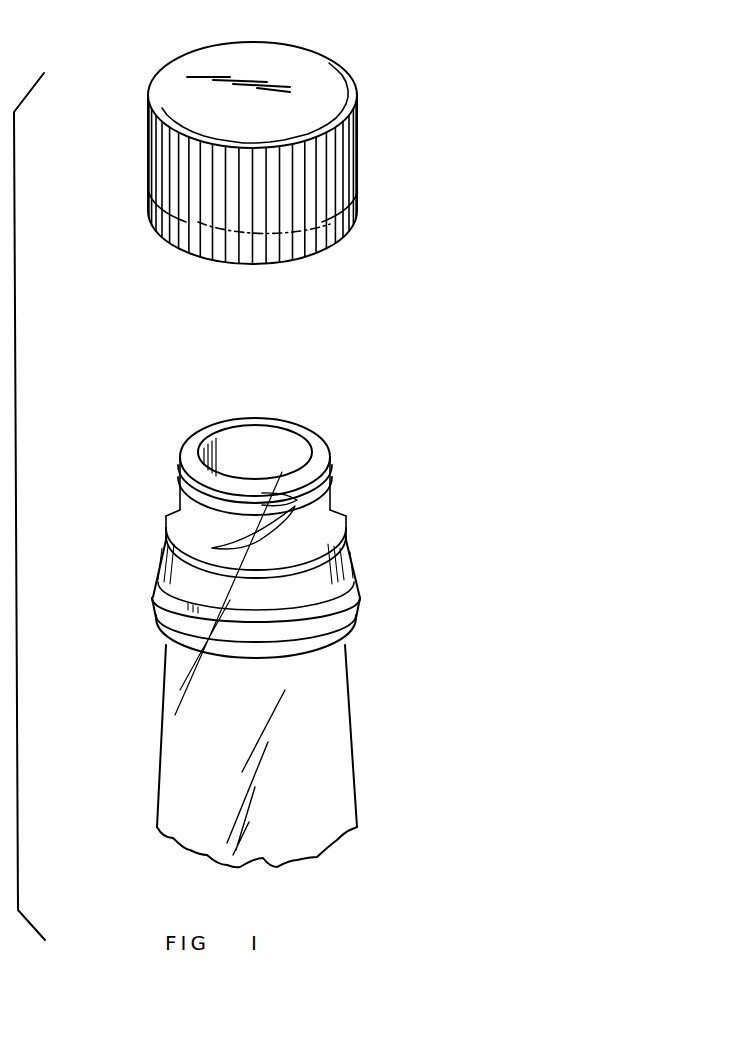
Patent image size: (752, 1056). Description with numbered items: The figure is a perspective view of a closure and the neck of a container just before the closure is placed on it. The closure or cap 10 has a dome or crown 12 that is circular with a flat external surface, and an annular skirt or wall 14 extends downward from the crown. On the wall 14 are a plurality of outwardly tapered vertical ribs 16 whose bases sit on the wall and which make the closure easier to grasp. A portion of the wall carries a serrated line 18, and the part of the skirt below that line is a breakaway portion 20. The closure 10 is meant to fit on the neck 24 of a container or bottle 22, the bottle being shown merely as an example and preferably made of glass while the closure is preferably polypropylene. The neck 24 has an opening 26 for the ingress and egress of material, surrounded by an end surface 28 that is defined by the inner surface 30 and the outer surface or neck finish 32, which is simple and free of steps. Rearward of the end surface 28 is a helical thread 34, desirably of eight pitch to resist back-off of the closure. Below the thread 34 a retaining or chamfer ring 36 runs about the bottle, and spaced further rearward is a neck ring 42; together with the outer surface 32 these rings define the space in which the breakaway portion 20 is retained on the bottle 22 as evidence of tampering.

The closure 10 is at (362, 68).
The dome or crown 12 is at (310, 57).
The annular skirt or wall 14 is at (352, 163).
The outwardly tapered vertical ribs 16 is at (354, 239).
The serrated line 18 is at (292, 230).
The breakaway portion 20 is at (190, 240).
The container or bottle 22 is at (373, 618).
The neck 24 is at (338, 728).
The opening 26 is at (263, 447).
The end surface 28 is at (218, 428).
The inner surface 30 is at (208, 447).
The outer surface or neck finish 32 is at (327, 467).
The helical thread 34 is at (330, 493).
The retaining or chamfer ring 36 is at (348, 558).
The neck ring 42 is at (165, 627).